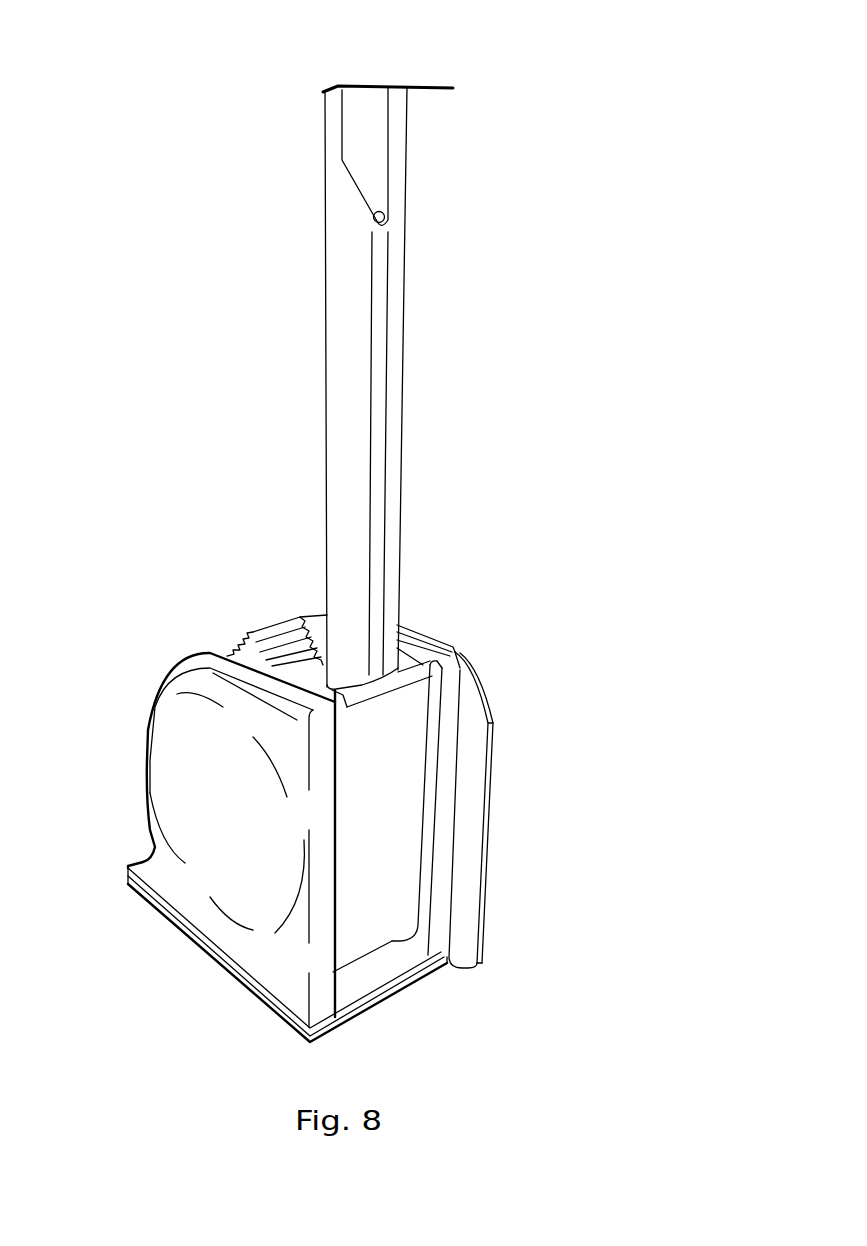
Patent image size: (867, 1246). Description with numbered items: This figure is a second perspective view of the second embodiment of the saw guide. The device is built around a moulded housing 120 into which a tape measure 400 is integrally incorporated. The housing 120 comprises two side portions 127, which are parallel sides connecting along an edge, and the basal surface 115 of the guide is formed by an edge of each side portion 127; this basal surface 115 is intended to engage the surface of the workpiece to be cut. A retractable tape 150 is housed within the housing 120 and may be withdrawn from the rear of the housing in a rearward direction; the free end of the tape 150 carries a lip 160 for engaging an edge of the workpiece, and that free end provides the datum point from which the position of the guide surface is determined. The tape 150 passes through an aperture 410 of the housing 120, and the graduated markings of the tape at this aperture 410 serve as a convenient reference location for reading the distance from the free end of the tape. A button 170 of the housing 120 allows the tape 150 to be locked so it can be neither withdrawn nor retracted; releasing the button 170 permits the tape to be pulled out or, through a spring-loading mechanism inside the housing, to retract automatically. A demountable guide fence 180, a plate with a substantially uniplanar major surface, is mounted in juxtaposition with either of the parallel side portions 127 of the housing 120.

The basal surface 115 is at (325, 927).
The housing 120 is at (145, 755).
The side portions 127 is at (180, 780).
The tape 150 is at (402, 450).
The lip 160 is at (427, 88).
The button 170 is at (280, 622).
The guide fence 180 is at (490, 795).
The tape measure 400 is at (390, 873).
The aperture 410 is at (410, 666).